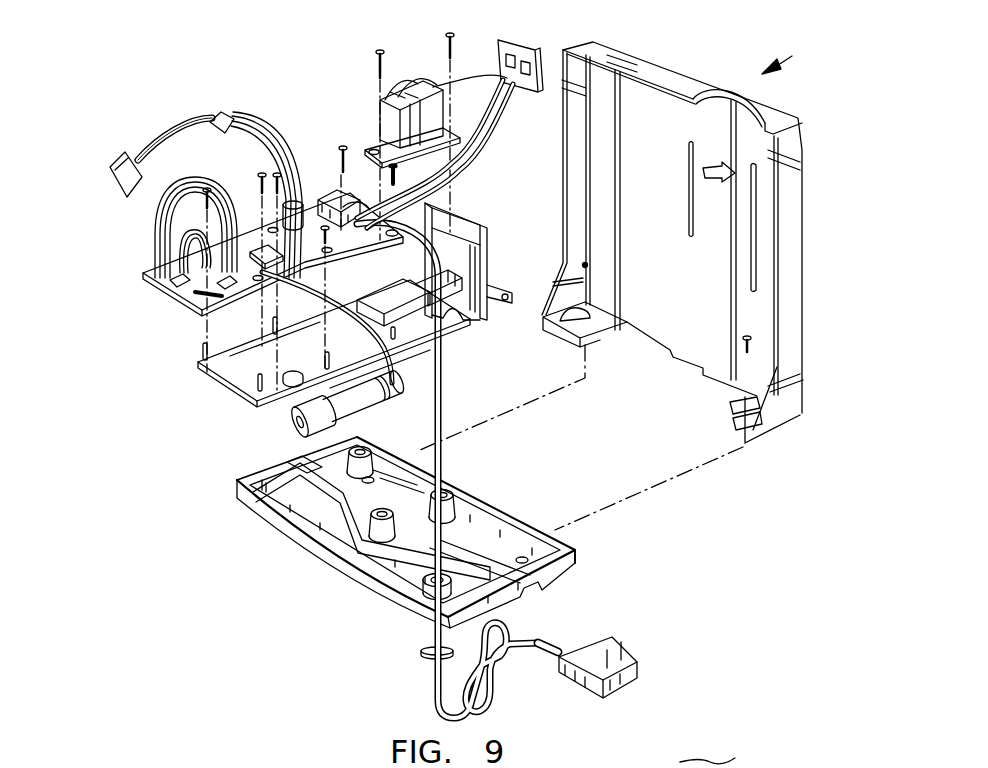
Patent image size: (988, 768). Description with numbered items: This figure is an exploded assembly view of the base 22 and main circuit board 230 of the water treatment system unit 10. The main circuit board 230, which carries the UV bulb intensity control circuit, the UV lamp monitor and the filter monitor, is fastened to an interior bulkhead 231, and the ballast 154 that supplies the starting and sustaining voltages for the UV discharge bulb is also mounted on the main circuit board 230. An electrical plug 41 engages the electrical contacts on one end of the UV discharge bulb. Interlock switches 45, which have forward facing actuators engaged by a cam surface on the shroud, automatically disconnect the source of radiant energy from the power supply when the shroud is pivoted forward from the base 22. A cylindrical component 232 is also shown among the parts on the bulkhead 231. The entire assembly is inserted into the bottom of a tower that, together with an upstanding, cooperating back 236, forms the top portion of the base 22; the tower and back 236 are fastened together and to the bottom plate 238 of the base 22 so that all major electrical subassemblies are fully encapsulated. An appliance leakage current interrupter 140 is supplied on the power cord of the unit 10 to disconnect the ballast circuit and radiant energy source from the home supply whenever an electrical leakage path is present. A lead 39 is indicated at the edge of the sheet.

The water treatment system unit 10 is at (791, 58).
The base 22 is at (313, 553).
The lead 39 is at (720, 758).
The electrical plug 41 is at (123, 190).
The interlock switches 45 is at (522, 56).
The appliance leakage current interrupter 140 is at (590, 652).
The ballast 154 is at (380, 102).
The main circuit board 230 is at (183, 303).
The interior bulkhead 231 is at (203, 375).
The fuse holder 232 is at (270, 433).
The back 236 is at (800, 215).
The bottom plate 238 is at (360, 560).